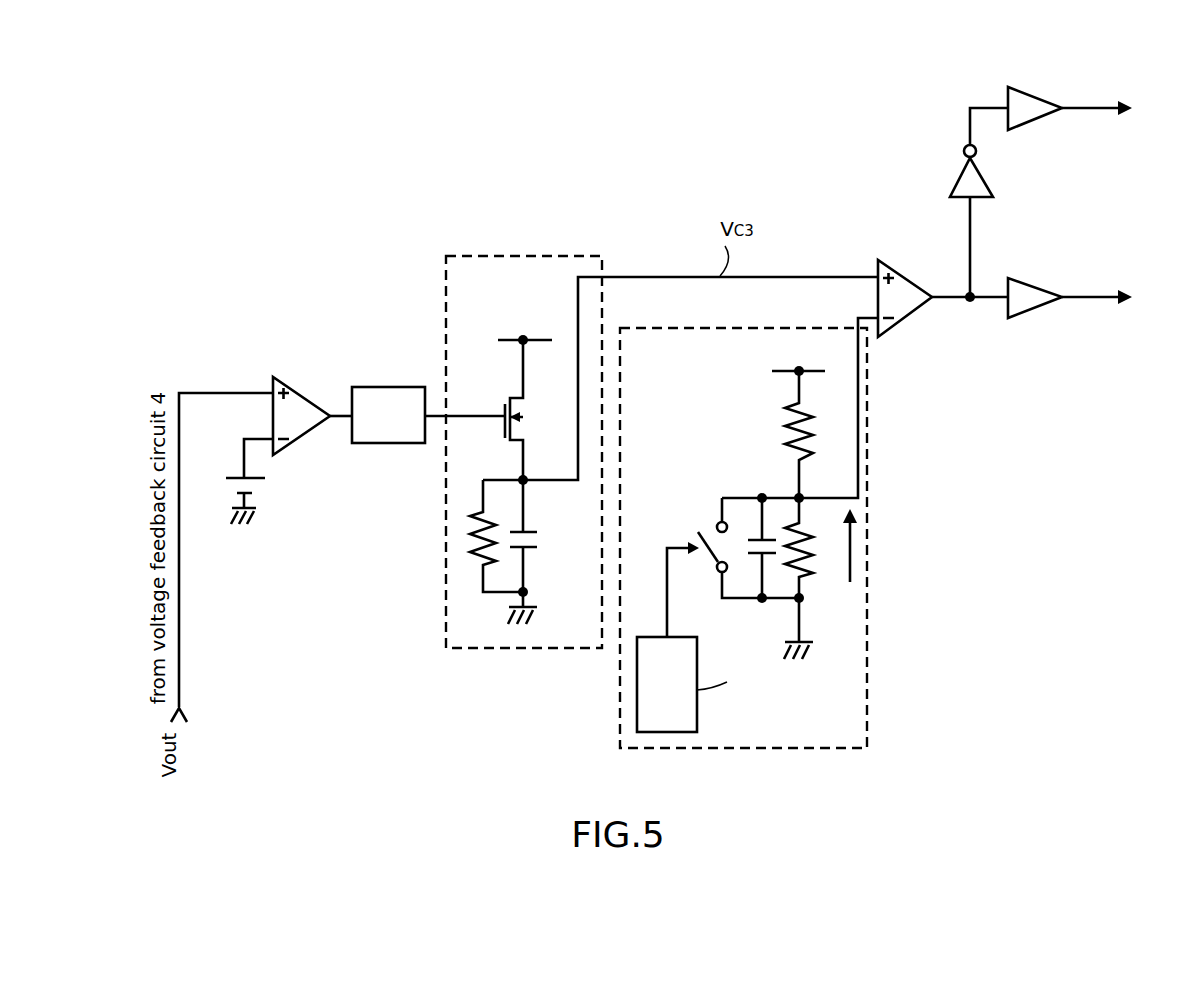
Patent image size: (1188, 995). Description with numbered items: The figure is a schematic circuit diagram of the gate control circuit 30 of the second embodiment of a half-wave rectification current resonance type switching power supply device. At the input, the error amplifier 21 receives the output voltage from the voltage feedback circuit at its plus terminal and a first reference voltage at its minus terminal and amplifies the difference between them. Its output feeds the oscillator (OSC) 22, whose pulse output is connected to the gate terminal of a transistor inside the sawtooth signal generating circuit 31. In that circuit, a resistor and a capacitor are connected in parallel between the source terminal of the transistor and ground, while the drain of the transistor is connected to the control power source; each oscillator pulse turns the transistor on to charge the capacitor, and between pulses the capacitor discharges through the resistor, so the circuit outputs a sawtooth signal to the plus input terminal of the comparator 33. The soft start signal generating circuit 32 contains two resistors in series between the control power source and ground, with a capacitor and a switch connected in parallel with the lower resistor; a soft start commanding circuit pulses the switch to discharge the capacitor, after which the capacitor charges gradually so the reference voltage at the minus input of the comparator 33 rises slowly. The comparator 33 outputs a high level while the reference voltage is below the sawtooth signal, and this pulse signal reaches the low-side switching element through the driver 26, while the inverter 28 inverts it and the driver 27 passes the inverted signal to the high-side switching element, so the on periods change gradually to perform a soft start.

The error amplifier 21 is at (296, 388).
The oscillator (OSC) 22 is at (378, 386).
The driver 26 is at (1030, 280).
The driver 27 is at (1035, 93).
The inverter (inverting circuit) 28 is at (958, 178).
The gate control circuit 30 is at (1056, 688).
The sawtooth signal generating circuit 31 is at (446, 581).
The soft start signal generating circuit 32 is at (868, 455).
The comparator 33 is at (877, 258).